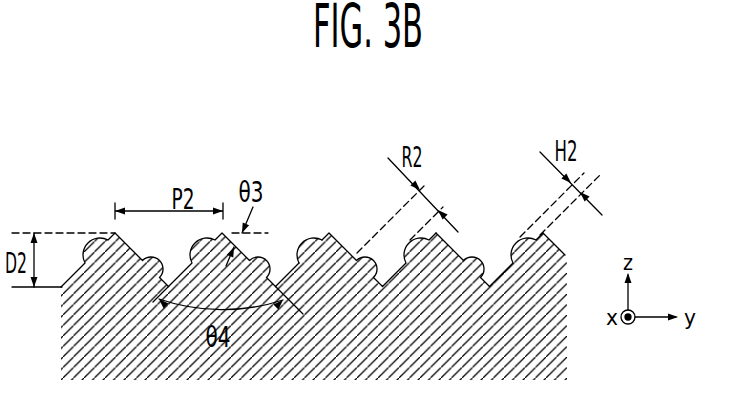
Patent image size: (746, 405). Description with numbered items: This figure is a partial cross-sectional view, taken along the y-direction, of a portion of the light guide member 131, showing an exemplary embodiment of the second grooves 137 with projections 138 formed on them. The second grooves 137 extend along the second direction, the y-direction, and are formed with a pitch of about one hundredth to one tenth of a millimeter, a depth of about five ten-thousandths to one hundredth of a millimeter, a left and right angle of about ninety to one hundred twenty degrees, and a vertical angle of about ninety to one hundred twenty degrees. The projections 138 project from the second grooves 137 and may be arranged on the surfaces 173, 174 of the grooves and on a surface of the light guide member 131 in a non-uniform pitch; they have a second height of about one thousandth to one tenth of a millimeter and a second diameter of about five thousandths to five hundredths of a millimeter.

The light guide member 131 is at (459, 348).
The second grooves 137 is at (173, 255).
The projections 138 is at (303, 246).
The surface 173 is at (498, 275).
The surface 174 is at (450, 248).